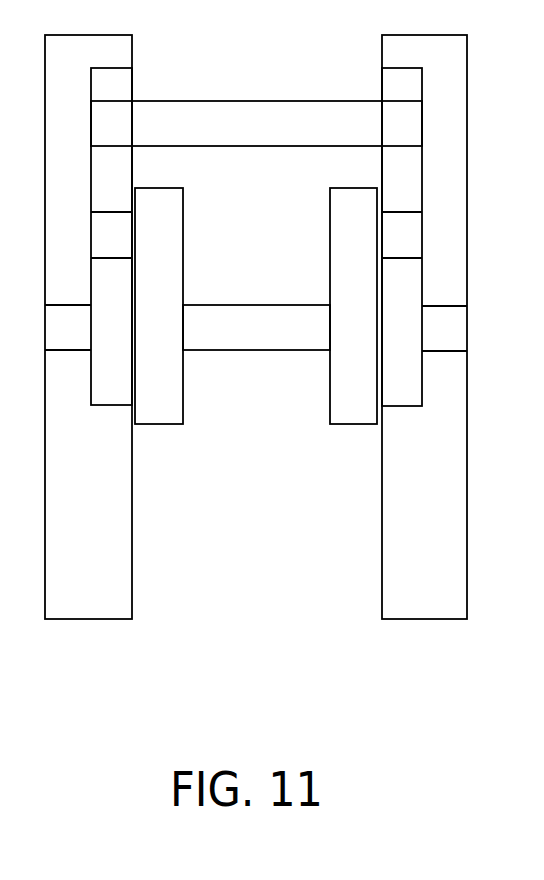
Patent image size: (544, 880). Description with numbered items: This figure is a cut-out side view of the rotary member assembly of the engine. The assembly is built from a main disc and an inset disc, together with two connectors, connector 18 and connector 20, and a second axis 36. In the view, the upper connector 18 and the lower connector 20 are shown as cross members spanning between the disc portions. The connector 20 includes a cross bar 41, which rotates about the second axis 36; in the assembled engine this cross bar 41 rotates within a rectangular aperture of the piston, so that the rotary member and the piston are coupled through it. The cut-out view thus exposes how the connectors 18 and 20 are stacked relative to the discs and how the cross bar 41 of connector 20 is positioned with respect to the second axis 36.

The connector 18 is at (247, 102).
The connector 20 is at (255, 504).
The second axis 36 is at (410, 213).
The cross bar 41 is at (232, 352).